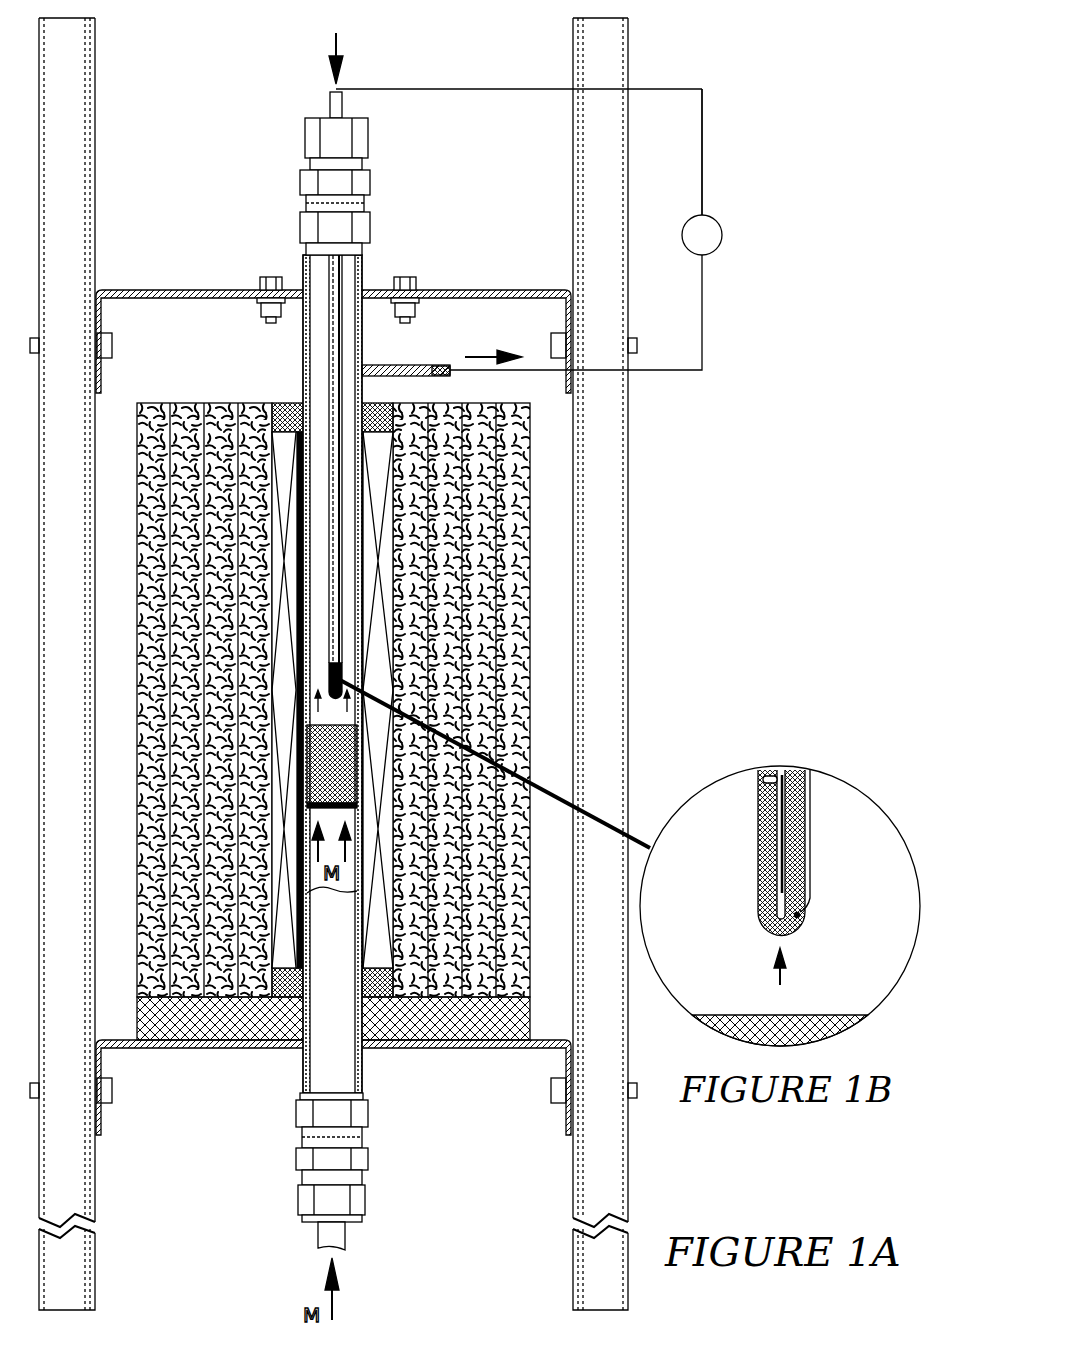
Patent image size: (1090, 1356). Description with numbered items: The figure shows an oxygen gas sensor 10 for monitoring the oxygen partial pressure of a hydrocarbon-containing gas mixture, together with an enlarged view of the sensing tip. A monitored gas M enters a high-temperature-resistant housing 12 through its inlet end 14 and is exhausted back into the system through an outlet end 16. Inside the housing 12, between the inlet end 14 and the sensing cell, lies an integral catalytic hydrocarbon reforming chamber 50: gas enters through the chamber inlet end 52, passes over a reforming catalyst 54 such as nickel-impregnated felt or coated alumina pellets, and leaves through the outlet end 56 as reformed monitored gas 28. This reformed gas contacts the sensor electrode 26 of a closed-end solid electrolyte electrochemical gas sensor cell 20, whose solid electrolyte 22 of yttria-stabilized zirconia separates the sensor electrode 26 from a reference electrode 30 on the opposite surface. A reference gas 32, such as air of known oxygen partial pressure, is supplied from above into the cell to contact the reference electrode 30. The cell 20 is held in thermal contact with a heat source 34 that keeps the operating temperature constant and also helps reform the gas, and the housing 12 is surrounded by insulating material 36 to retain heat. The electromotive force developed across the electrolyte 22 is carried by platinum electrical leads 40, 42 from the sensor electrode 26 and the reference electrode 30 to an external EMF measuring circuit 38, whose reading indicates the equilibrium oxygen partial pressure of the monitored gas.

In FIG. 1A, the gas sensor 10 is at (210, 1258).
In FIG. 1A, the housing 12 is at (303, 1067).
In FIG. 1A, the inlet end 14 is at (345, 1238).
In FIG. 1A, the outlet end 16 is at (412, 362).
In FIG. 1A, the gas sensor cell 20 is at (310, 268).
In FIG. 1B, the solid electrolyte 22 is at (760, 900).
In FIG. 1B, the sensor electrode 26 is at (760, 880).
In FIG. 1A, the reformed monitored gas 28 is at (345, 675).
In FIG. 1B, the reformed monitored gas 28 is at (783, 978).
In FIG. 1B, the reference electrode 30 is at (770, 778).
In FIG. 1A, the reference gas 32 is at (338, 41).
In FIG. 1B, the reference gas 32 is at (797, 917).
In FIG. 1A, the heat source 34 is at (285, 712).
In FIG. 1A, the insulating material 36 is at (150, 920).
In FIG. 1A, the EMF measuring circuit 38 is at (702, 235).
In FIG. 1A, the electrical lead 40 is at (703, 278).
In FIG. 1B, the electrical lead 40 is at (812, 845).
In FIG. 1A, the electrical lead 42 is at (703, 196).
In FIG. 1B, the electrical lead 42 is at (785, 825).
In FIG. 1A, the catalytic hydrocarbon reforming chamber 50 is at (300, 755).
In FIG. 1A, the inlet end of reforming chamber 52 is at (320, 807).
In FIG. 1A, the reforming catalyst 54 is at (325, 780).
In FIG. 1B, the reforming catalyst 54 is at (845, 1017).
In FIG. 1A, the outlet end of reforming chamber 56 is at (318, 757).
In FIG. 1B, the outlet end of reforming chamber 56 is at (768, 1000).